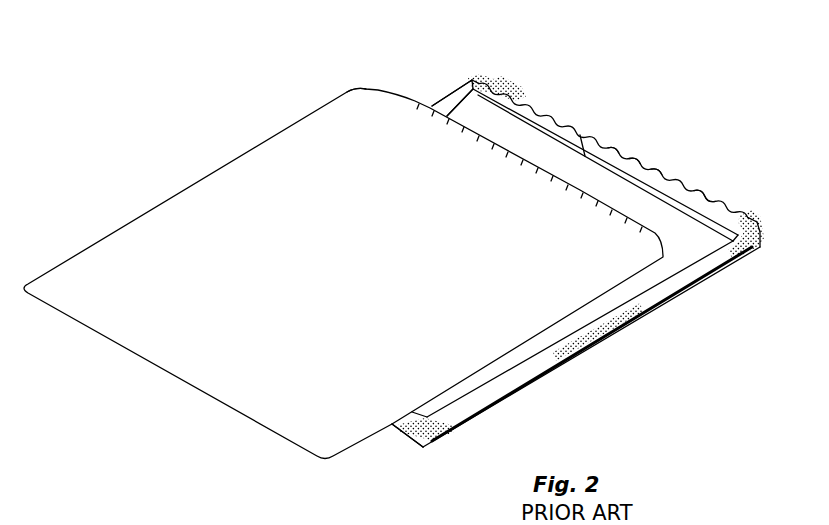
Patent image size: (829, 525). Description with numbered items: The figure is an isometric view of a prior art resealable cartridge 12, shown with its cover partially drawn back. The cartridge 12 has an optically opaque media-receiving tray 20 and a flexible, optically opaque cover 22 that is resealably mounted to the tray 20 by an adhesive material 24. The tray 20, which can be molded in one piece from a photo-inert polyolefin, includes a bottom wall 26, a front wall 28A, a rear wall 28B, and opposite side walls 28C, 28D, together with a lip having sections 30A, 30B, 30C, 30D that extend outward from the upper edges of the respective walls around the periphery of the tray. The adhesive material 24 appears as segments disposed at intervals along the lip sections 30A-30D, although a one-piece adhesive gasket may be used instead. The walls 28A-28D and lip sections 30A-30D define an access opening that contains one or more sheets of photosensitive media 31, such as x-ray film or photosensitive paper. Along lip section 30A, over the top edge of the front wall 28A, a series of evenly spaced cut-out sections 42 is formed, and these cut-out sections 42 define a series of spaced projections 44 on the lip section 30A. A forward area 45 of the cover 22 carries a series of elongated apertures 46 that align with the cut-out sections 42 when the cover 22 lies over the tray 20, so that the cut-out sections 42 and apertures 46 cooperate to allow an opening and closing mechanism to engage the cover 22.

The resealable cartridge 12 is at (633, 58).
The media-receiving tray 20 is at (565, 260).
The cover 22 is at (166, 217).
The adhesive material 24 is at (502, 85).
The bottom wall 26 is at (687, 298).
The front wall 28A is at (586, 146).
The rear wall 28B is at (418, 449).
The side wall 28C is at (470, 79).
The side wall 28D is at (692, 258).
The lip section 30A is at (535, 115).
The lip section 30B is at (391, 426).
The lip section 30C is at (437, 102).
The lip section 30D is at (527, 365).
The photosensitive media 31 is at (678, 222).
The cut-out sections 42 is at (652, 160).
The projections 44 is at (716, 203).
The forward area 45 is at (403, 97).
The elongated apertures 46 is at (410, 100).